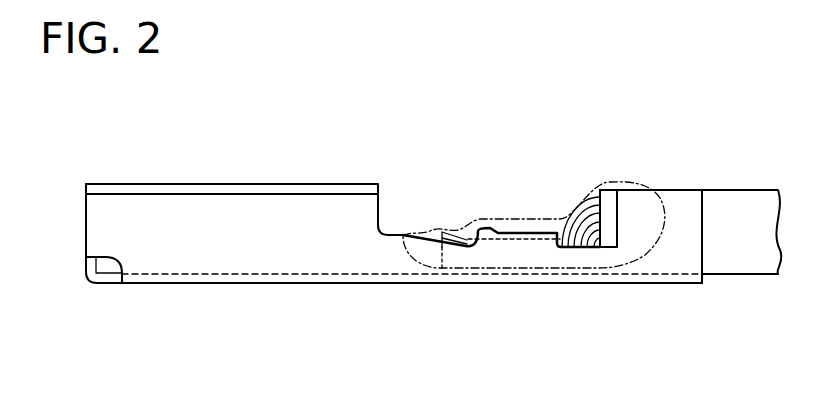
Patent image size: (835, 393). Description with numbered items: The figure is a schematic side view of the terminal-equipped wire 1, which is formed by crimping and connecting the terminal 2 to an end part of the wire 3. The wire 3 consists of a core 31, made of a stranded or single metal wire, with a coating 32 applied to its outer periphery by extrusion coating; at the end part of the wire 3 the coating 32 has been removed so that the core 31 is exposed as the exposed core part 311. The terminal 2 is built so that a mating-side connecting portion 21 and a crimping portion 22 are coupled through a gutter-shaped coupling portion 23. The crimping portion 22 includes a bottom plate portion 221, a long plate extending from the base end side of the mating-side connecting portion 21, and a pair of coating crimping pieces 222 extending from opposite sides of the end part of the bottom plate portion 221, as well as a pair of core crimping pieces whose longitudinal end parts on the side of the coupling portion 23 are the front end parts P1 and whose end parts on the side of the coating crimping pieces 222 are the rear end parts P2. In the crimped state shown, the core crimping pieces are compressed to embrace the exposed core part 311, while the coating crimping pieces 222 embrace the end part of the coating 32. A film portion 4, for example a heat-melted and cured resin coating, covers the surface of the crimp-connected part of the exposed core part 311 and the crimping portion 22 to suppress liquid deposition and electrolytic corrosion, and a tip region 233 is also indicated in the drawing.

The terminal-equipped wire 1 is at (573, 122).
The terminal 2 is at (370, 162).
The mating-side connecting portion 21 is at (292, 183).
The crimping portion 22 is at (566, 300).
The bottom plate portion 221 is at (498, 284).
The coating crimping pieces 222 is at (677, 193).
The coupling portion 23 is at (398, 265).
The tip portion 233 is at (518, 239).
The wire 3 is at (742, 190).
The core 31 is at (592, 188).
The exposed core part 311 is at (614, 189).
The coating 32 is at (748, 266).
The film portion 4 is at (643, 185).
The front end parts P1 is at (478, 208).
The rear end parts P2 is at (557, 210).